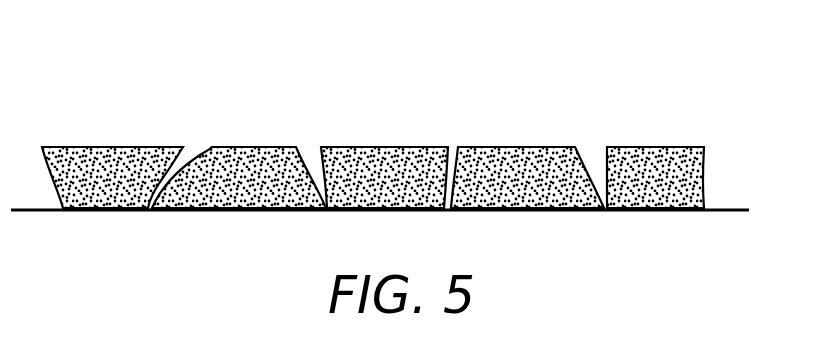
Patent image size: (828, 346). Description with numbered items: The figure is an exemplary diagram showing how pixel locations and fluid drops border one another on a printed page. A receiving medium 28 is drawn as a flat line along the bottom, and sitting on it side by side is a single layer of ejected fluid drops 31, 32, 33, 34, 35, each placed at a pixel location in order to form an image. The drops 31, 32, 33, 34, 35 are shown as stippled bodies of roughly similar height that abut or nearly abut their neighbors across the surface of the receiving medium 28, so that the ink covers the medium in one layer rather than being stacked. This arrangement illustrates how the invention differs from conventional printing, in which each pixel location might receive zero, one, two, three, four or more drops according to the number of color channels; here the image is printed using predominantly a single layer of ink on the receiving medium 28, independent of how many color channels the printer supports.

The receiving medium 28 is at (718, 212).
The ejected fluid drop 31 is at (125, 147).
The ejected fluid drop 32 is at (257, 147).
The ejected fluid drop 33 is at (391, 147).
The ejected fluid drop 34 is at (525, 147).
The ejected fluid drop 35 is at (651, 147).